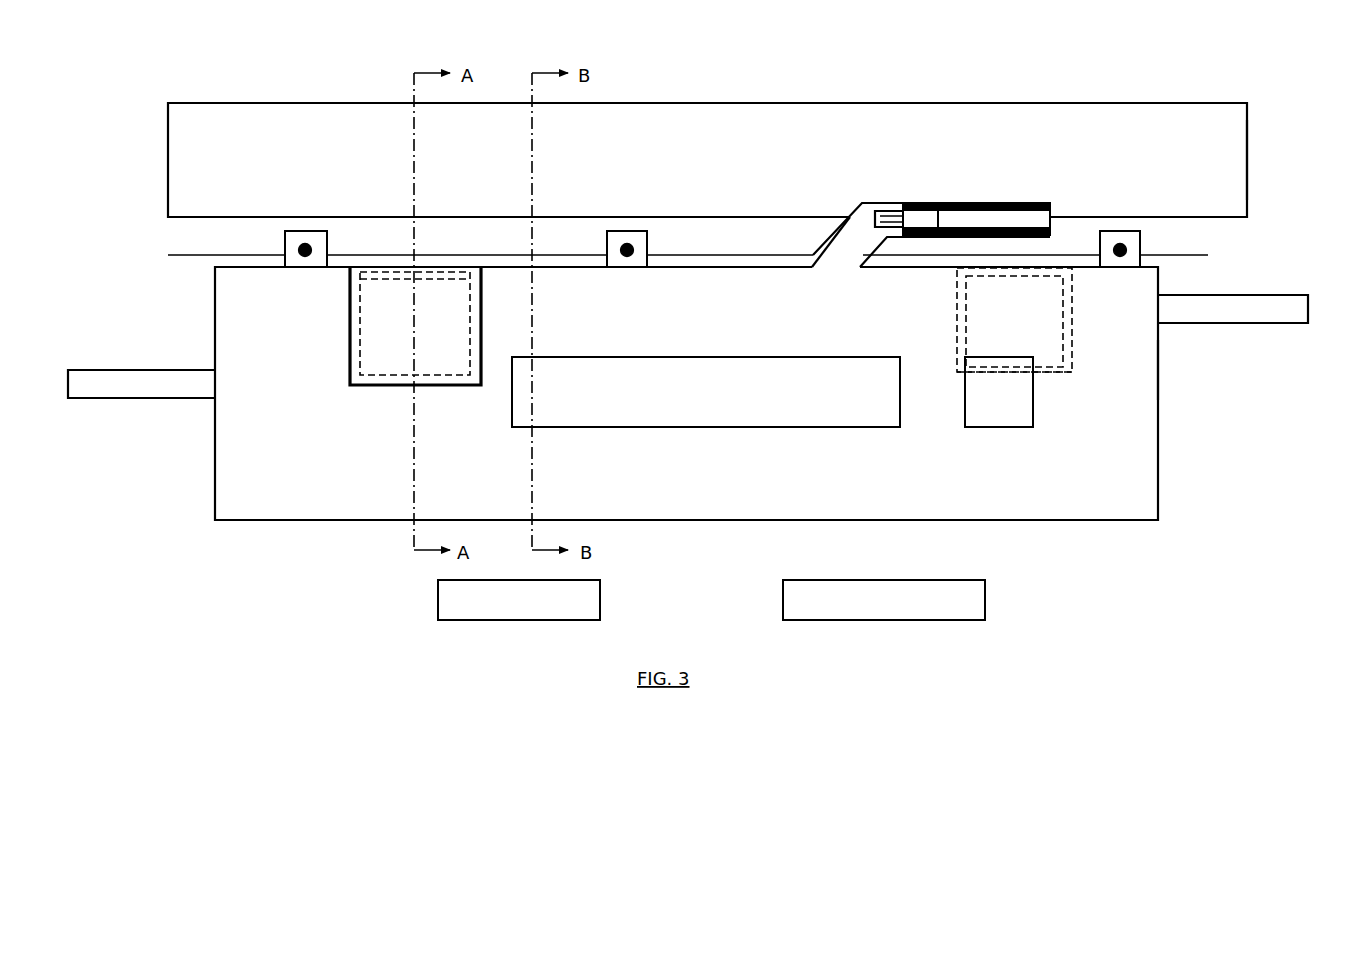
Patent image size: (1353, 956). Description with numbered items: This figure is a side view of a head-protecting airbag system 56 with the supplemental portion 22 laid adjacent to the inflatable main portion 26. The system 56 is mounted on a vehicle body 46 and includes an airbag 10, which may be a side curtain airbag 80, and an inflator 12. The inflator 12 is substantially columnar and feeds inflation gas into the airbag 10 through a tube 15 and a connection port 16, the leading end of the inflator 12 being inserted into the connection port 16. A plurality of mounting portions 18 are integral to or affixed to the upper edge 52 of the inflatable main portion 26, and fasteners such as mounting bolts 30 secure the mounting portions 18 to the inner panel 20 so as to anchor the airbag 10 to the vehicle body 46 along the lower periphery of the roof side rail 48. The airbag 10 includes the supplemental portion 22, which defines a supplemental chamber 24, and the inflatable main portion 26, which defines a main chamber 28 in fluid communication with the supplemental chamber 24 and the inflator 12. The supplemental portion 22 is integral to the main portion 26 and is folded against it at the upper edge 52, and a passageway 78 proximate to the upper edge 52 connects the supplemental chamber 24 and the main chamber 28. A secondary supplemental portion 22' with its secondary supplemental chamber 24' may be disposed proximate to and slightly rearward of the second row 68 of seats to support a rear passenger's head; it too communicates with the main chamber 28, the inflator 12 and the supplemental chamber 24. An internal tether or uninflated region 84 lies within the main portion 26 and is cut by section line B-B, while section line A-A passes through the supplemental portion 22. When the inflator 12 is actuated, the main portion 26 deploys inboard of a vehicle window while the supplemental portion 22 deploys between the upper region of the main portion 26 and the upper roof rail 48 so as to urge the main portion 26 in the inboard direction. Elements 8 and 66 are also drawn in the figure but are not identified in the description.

The connection lead 8 is at (125, 370).
The airbag 10 is at (754, 142).
The inflator 12 is at (993, 220).
The tube 15 is at (856, 212).
The connection port 16 is at (955, 252).
The mounting portions 18 is at (285, 254).
The inner panel 20 is at (707, 160).
The supplemental portion 22 is at (400, 326).
The secondary supplemental portion 22' is at (1034, 427).
The supplemental chamber 24 is at (415, 272).
The secondary supplemental chamber 24' is at (1014, 320).
The inflatable main portion 26 is at (1138, 430).
The main chamber 28 is at (1098, 520).
The mounting bolts 30 is at (303, 247).
The vehicle body 46 is at (643, 128).
The roof side rail 48 is at (748, 237).
The upper edge 52 is at (560, 263).
The head-protecting airbag system 56 is at (1260, 167).
The first module 66 is at (438, 615).
The second row 68 is at (985, 592).
The passageway 78 is at (458, 272).
The side curtain airbag 80 is at (1180, 371).
The internal tether 84 is at (772, 392).